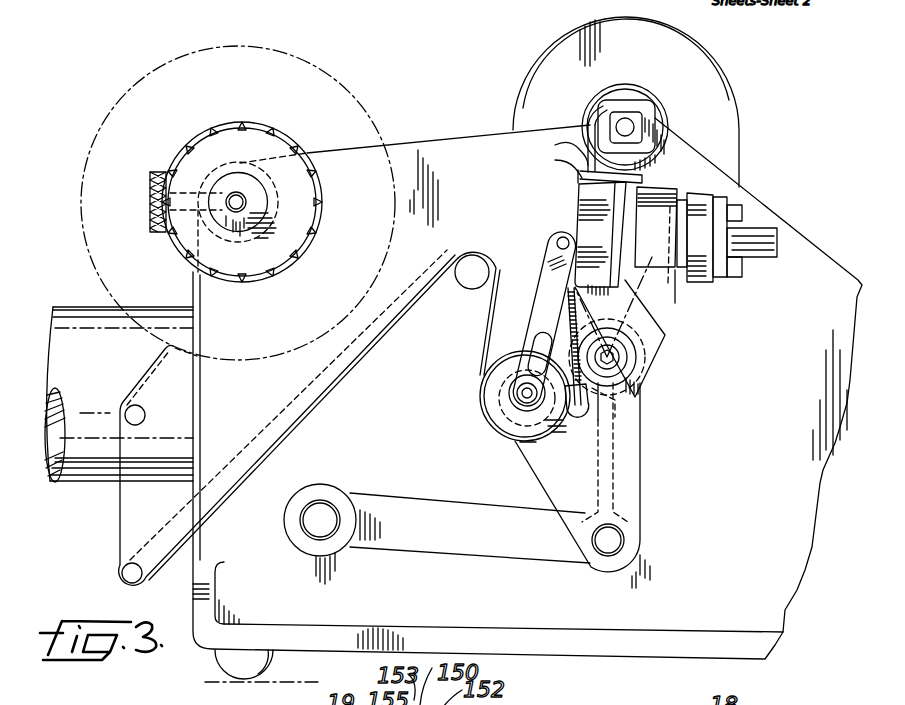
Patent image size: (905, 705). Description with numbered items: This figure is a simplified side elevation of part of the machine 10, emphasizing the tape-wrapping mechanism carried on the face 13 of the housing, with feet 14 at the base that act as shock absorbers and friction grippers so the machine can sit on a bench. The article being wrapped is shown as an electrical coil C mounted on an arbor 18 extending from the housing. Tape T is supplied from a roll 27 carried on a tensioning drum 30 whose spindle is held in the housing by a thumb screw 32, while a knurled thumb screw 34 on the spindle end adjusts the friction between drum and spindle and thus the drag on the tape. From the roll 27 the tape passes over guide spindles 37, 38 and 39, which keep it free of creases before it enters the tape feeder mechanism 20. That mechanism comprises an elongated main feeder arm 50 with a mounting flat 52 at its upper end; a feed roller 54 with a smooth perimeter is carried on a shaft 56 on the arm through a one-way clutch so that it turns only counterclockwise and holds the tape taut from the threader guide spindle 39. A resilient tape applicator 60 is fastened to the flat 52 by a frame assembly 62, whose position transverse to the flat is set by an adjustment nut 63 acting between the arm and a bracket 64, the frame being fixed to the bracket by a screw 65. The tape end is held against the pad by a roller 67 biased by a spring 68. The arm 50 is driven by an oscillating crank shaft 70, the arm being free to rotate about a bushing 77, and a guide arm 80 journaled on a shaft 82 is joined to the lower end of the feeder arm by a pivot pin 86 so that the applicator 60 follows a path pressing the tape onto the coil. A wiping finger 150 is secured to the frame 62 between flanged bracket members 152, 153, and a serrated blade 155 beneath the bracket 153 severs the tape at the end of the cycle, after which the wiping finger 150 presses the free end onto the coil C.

The machine 10 is at (438, 126).
The face of the housing 13 is at (477, 143).
The feet 14 is at (237, 668).
The arbor 18 is at (640, 120).
The tape feeder mechanism 20 is at (643, 421).
The tape roll 27 is at (180, 66).
The tensioning drum 30 is at (270, 148).
The thumb screw 32 is at (256, 203).
The knurled thumb screw 34 is at (150, 202).
The guide spindle 37 is at (140, 414).
The guide spindle 38 is at (126, 565).
The threader guide spindle 39 is at (465, 270).
The main feeder arm 50 is at (640, 478).
The mounting flat 52 is at (656, 190).
The feed roller 54 is at (497, 358).
The shaft 56 is at (516, 394).
The tape applicator 60 is at (580, 222).
The frame assembly 62 is at (636, 278).
The adjustment nut 63 is at (767, 231).
The bracket 64 is at (678, 270).
The screw 65 is at (733, 248).
The roller 67 is at (550, 248).
The spring 68 is at (586, 412).
The oscillating crank shaft 70 is at (632, 345).
The bushing 77 is at (613, 363).
The guide arm 80 is at (440, 540).
The shaft 82 is at (318, 522).
The pivot pin 86 is at (612, 540).
The wiping finger 150 is at (586, 127).
The flanged bracket member 152 is at (597, 168).
The flanged bracket member 153 is at (555, 151).
The serrated blade 155 is at (550, 172).
The electrical coil C is at (620, 82).
The tape T is at (348, 366).